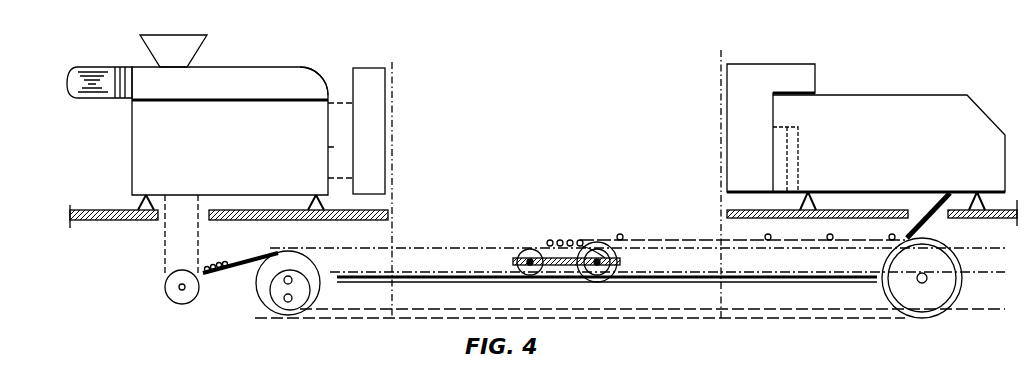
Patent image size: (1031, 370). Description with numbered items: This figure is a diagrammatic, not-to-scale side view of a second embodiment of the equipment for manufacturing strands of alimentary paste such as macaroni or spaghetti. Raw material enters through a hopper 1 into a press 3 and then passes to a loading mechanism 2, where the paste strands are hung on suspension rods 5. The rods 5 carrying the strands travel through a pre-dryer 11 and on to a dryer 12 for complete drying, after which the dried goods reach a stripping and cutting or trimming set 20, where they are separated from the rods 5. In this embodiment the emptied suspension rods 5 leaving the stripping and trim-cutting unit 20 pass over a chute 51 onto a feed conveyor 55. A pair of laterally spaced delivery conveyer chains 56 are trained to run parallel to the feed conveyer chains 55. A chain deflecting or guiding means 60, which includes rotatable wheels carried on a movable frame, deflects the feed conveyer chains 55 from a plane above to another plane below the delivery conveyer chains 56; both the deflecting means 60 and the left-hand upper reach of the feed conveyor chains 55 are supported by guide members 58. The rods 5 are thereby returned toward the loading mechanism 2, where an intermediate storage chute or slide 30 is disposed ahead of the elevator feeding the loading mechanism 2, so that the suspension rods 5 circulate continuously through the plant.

The hopper 1 is at (200, 43).
The loading mechanism 2 is at (220, 139).
The press 3 is at (272, 67).
The suspension rods 5 is at (214, 262).
The pre-dryer 11 is at (378, 141).
The dryer 12 is at (756, 148).
The stripping and cutting or trimming set 20 is at (894, 148).
The chute or slide 30 is at (242, 272).
The chute 51 is at (930, 216).
The feed conveyor chains 55 is at (672, 240).
The delivery conveyer chains 56 is at (420, 248).
The guide members 58 is at (655, 283).
The guiding means 60 is at (567, 266).